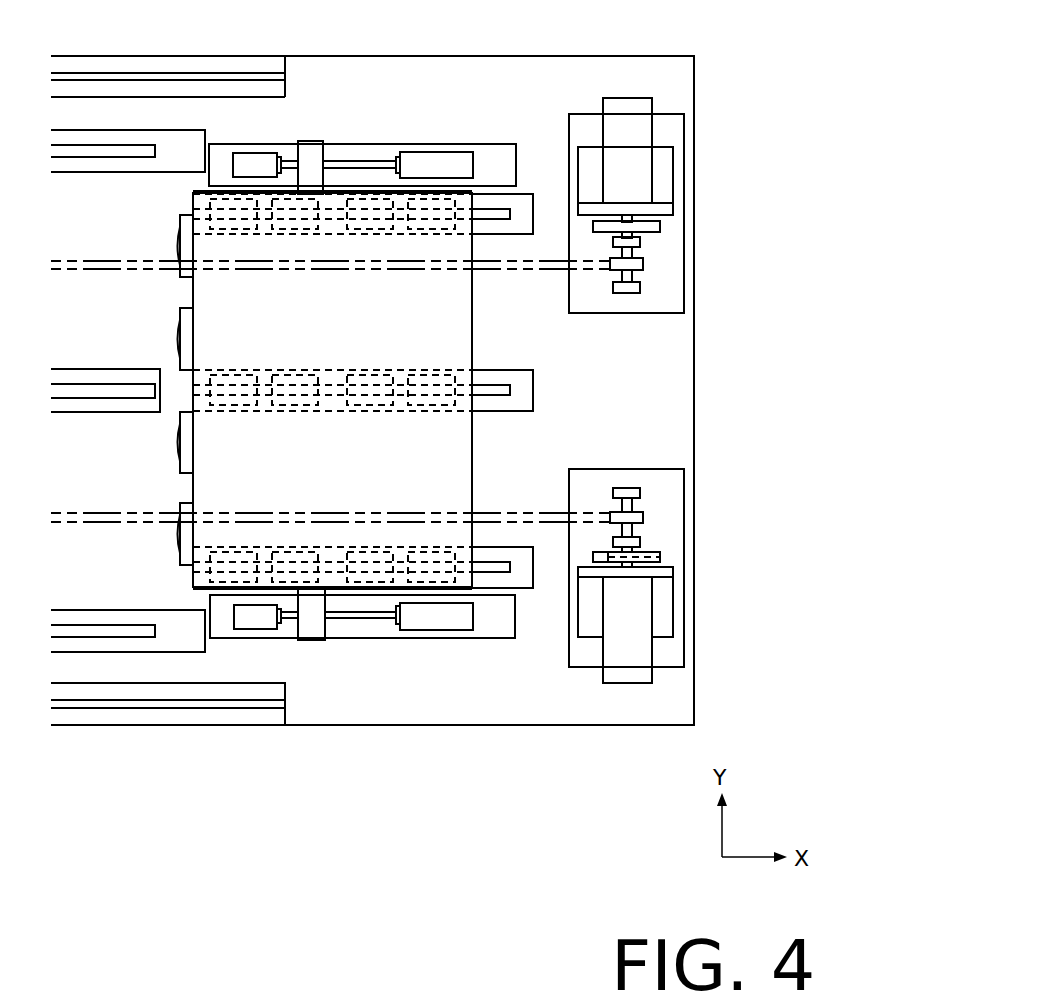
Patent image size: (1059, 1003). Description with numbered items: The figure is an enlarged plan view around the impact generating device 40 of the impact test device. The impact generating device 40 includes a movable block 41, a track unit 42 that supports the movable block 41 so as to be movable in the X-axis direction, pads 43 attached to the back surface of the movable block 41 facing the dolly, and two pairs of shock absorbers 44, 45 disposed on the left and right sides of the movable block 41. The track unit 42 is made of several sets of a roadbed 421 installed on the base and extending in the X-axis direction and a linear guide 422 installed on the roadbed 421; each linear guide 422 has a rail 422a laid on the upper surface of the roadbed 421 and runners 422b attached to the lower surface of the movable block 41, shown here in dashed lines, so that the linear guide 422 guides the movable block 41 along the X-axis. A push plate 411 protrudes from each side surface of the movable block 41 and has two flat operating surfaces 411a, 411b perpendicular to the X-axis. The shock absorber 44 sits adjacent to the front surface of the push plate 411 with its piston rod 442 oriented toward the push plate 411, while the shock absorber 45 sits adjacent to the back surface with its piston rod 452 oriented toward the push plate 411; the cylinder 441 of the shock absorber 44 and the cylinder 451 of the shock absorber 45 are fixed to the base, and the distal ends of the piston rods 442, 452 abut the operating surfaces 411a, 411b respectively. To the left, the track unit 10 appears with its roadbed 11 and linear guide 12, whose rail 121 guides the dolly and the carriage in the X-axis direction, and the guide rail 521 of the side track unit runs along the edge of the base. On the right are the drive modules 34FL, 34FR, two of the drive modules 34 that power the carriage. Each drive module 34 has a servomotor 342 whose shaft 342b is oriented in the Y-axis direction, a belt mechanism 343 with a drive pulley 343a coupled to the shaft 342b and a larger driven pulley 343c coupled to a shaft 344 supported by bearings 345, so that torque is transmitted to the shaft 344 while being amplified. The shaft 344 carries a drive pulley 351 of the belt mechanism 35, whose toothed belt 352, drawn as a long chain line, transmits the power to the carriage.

The track unit 10 is at (148, 767).
The roadbed 11 is at (103, 645).
The linear guide 12 is at (123, 772).
The rail 121 is at (72, 639).
The drive module 34 is at (720, 395).
The front-left drive module 34FL is at (668, 108).
The front-right drive module 34FR is at (692, 586).
The servomotor 342 is at (696, 630).
The shaft of servomotor 342b is at (668, 569).
The belt mechanism 343 is at (704, 547).
The drive pulley 343a is at (660, 557).
The driven pulley 343c is at (656, 553).
The shaft 344 is at (643, 524).
The bearing 345 is at (641, 493).
The belt mechanism 35 is at (351, 391).
The drive pulley 351 is at (613, 493).
The toothed belt 352 is at (501, 511).
The impact generating device 40 is at (440, 136).
The movable block 41 is at (473, 472).
The track unit 42 is at (422, 391).
The roadbed 421 is at (532, 391).
The linear guide 422 is at (393, 391).
The rail 422a is at (508, 363).
The runner 422b is at (441, 374).
The pad 43 is at (188, 306).
The shock absorber 44 is at (379, 723).
The cylinder 441 is at (428, 631).
The piston rod 442 is at (365, 622).
The push plate 411 is at (383, 697).
The operating surface 411a is at (326, 631).
The operating surface 411b is at (299, 627).
The shock absorber 45 is at (238, 714).
The cylinder 451 is at (251, 630).
The piston rod 452 is at (288, 623).
The guide rail 521 is at (278, 718).